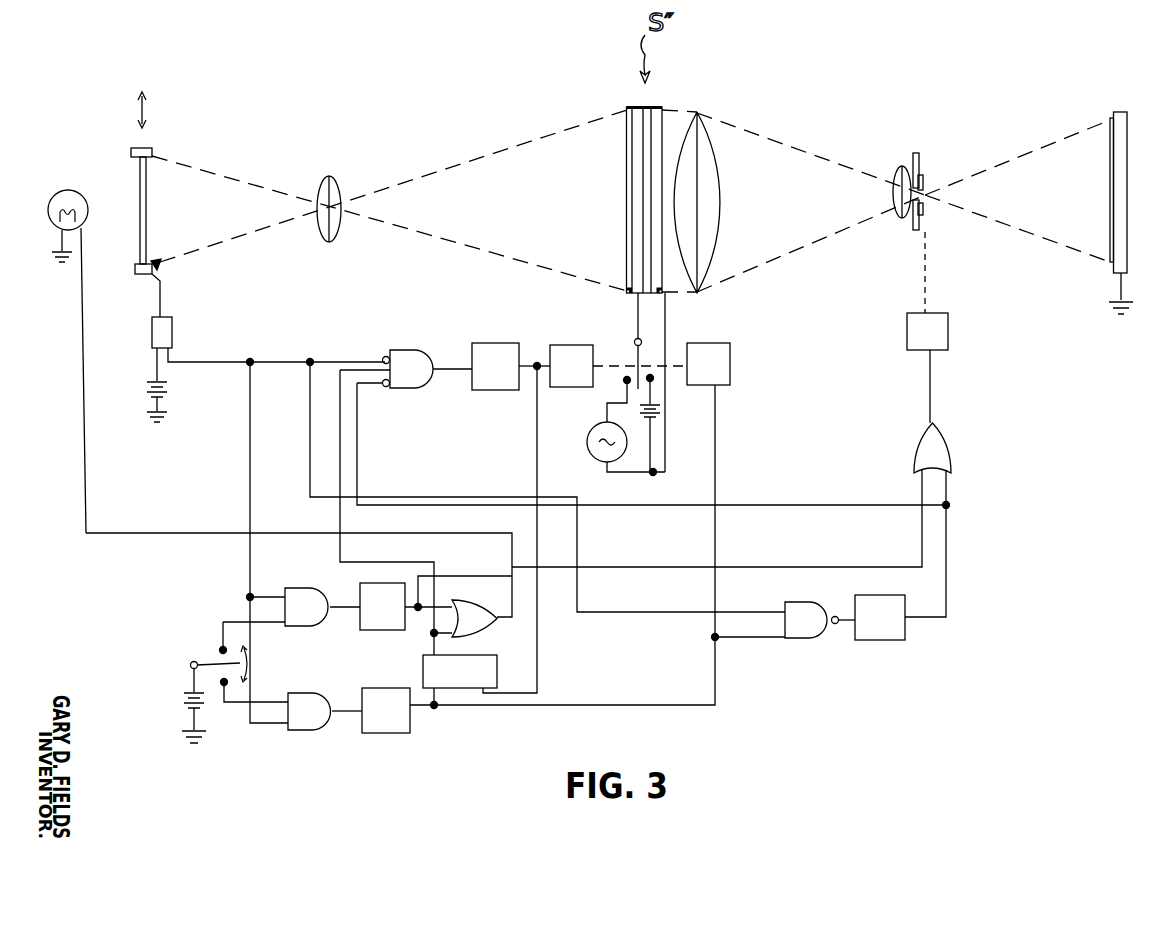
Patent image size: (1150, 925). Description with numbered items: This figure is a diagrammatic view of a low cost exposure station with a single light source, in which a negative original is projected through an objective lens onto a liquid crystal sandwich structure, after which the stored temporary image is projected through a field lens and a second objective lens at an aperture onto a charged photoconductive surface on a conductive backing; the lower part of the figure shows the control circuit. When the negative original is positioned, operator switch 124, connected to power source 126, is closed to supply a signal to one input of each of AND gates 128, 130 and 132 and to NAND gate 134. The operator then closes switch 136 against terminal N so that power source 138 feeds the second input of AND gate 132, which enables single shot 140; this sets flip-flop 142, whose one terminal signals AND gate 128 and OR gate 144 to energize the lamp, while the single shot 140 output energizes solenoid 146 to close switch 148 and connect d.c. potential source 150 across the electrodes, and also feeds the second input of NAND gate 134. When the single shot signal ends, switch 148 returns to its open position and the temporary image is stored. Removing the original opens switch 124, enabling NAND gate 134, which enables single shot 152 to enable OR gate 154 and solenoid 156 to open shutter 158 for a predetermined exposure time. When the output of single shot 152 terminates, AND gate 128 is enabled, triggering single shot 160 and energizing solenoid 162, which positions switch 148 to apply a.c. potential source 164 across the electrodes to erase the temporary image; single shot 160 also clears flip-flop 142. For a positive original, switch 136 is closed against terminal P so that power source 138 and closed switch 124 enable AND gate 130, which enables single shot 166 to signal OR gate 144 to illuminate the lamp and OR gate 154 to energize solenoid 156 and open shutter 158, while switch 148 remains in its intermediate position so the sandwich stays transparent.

The switch 124 is at (172, 330).
The power source 126 is at (168, 385).
The AND gate 128 is at (418, 362).
The AND gate 130 is at (308, 598).
The AND gate 132 is at (310, 700).
The NAND gate 134 is at (812, 628).
The switch 136 is at (198, 662).
The power source 138 is at (184, 705).
The single shot 140 is at (378, 722).
The flip-flop 142 is at (497, 680).
The OR gate 144 is at (502, 592).
The solenoid 146 is at (728, 352).
The switch 148 is at (634, 340).
The d.c. potential source 150 is at (645, 430).
The single shot 152 is at (890, 632).
The OR gate 154 is at (948, 444).
The solenoid 156 is at (948, 330).
The shutter 158 is at (924, 205).
The single shot 160 is at (500, 322).
The solenoid 162 is at (560, 352).
The a.c. potential source 164 is at (590, 440).
The single shot 166 is at (378, 620).